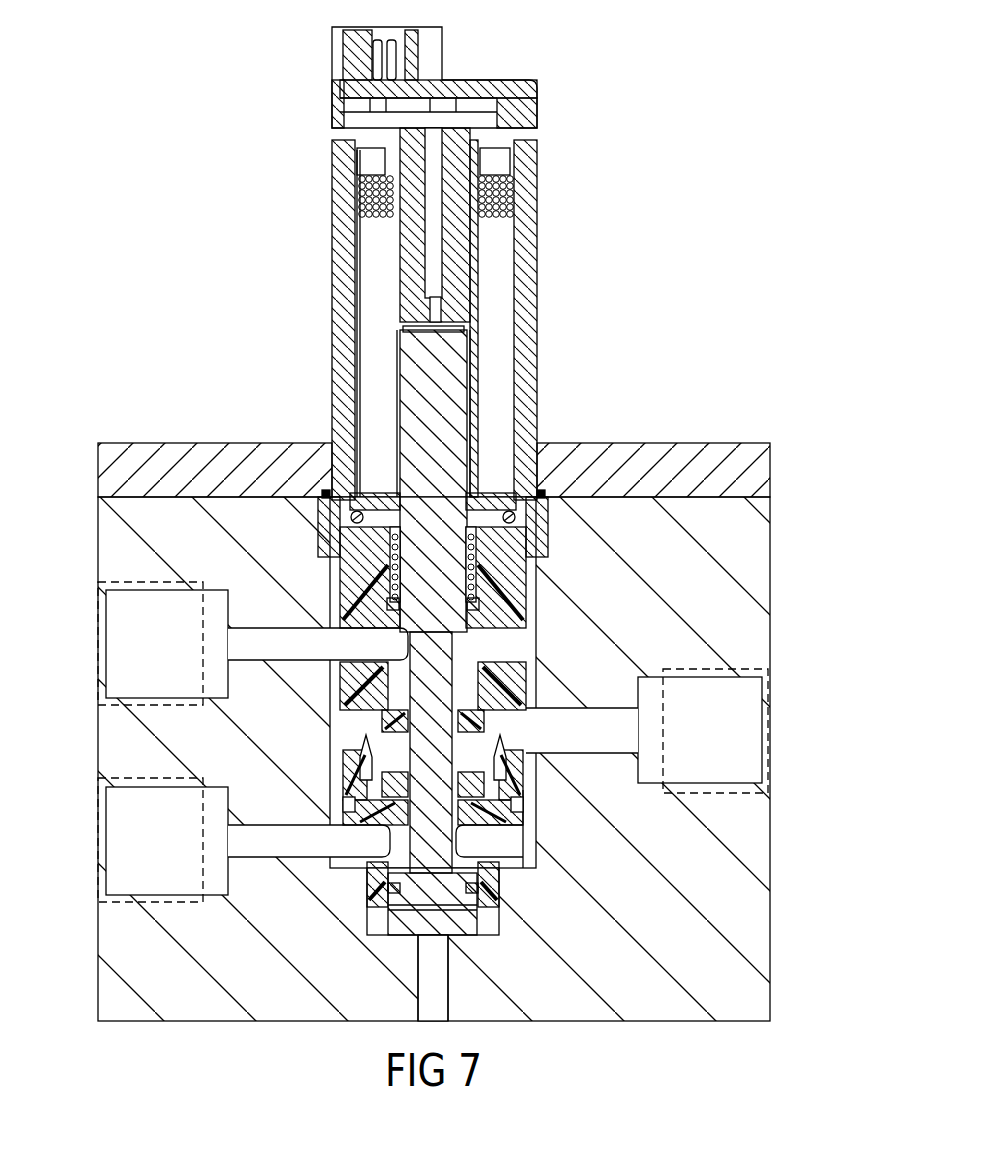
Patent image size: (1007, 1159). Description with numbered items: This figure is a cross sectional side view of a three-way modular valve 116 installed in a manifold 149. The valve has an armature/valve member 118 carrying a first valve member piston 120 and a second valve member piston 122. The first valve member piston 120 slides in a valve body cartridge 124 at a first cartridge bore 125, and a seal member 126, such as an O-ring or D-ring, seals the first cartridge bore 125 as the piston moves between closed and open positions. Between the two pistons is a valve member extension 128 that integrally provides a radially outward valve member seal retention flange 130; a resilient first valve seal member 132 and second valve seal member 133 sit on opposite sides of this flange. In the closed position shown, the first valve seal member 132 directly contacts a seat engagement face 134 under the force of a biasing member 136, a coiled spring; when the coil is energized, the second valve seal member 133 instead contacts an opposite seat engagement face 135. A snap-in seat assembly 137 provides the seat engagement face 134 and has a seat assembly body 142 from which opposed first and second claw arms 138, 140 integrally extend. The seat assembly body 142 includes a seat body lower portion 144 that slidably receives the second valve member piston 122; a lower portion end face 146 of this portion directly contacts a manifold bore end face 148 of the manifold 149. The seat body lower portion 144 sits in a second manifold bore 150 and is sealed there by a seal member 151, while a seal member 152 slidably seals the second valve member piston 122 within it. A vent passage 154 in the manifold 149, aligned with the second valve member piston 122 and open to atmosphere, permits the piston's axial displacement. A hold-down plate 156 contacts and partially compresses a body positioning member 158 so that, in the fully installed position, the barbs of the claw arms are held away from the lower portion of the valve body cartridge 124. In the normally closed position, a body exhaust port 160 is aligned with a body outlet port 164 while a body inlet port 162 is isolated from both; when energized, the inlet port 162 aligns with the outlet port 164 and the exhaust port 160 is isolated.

The three-way modular valve 116 is at (600, 265).
The armature/valve member 118 is at (445, 425).
The first valve member piston 120 is at (388, 600).
The second valve member piston 122 is at (458, 905).
The valve body cartridge 124 is at (505, 570).
The first cartridge bore 125 is at (483, 545).
The seal member 126 is at (480, 608).
The valve member extension 128 is at (445, 684).
The valve member seal retention flange 130 is at (383, 707).
The first valve seal member 132 is at (370, 785).
The second valve seal member 133 is at (483, 722).
The seat engagement face 134 is at (358, 826).
The opposite seat engagement face 135 is at (378, 670).
The biasing member 136 is at (393, 537).
The snap-in seat assembly 137 is at (551, 830).
The first claw arm 138 is at (363, 748).
The second claw arm 140 is at (505, 773).
The seat assembly body 142 is at (505, 808).
The seat body lower portion 144 is at (488, 870).
The lower portion end face 146 is at (380, 915).
The manifold bore end face 148 is at (508, 896).
The manifold 149 is at (118, 968).
The second manifold bore 150 is at (352, 872).
The seal member 151 is at (395, 880).
The seal member 152 is at (385, 895).
The vent passage 154 is at (440, 1000).
The hold-down plate 156 is at (205, 457).
The body positioning member 158 is at (541, 490).
The body exhaust port 160 is at (130, 650).
The body inlet port 162 is at (120, 845).
The body outlet port 164 is at (760, 732).